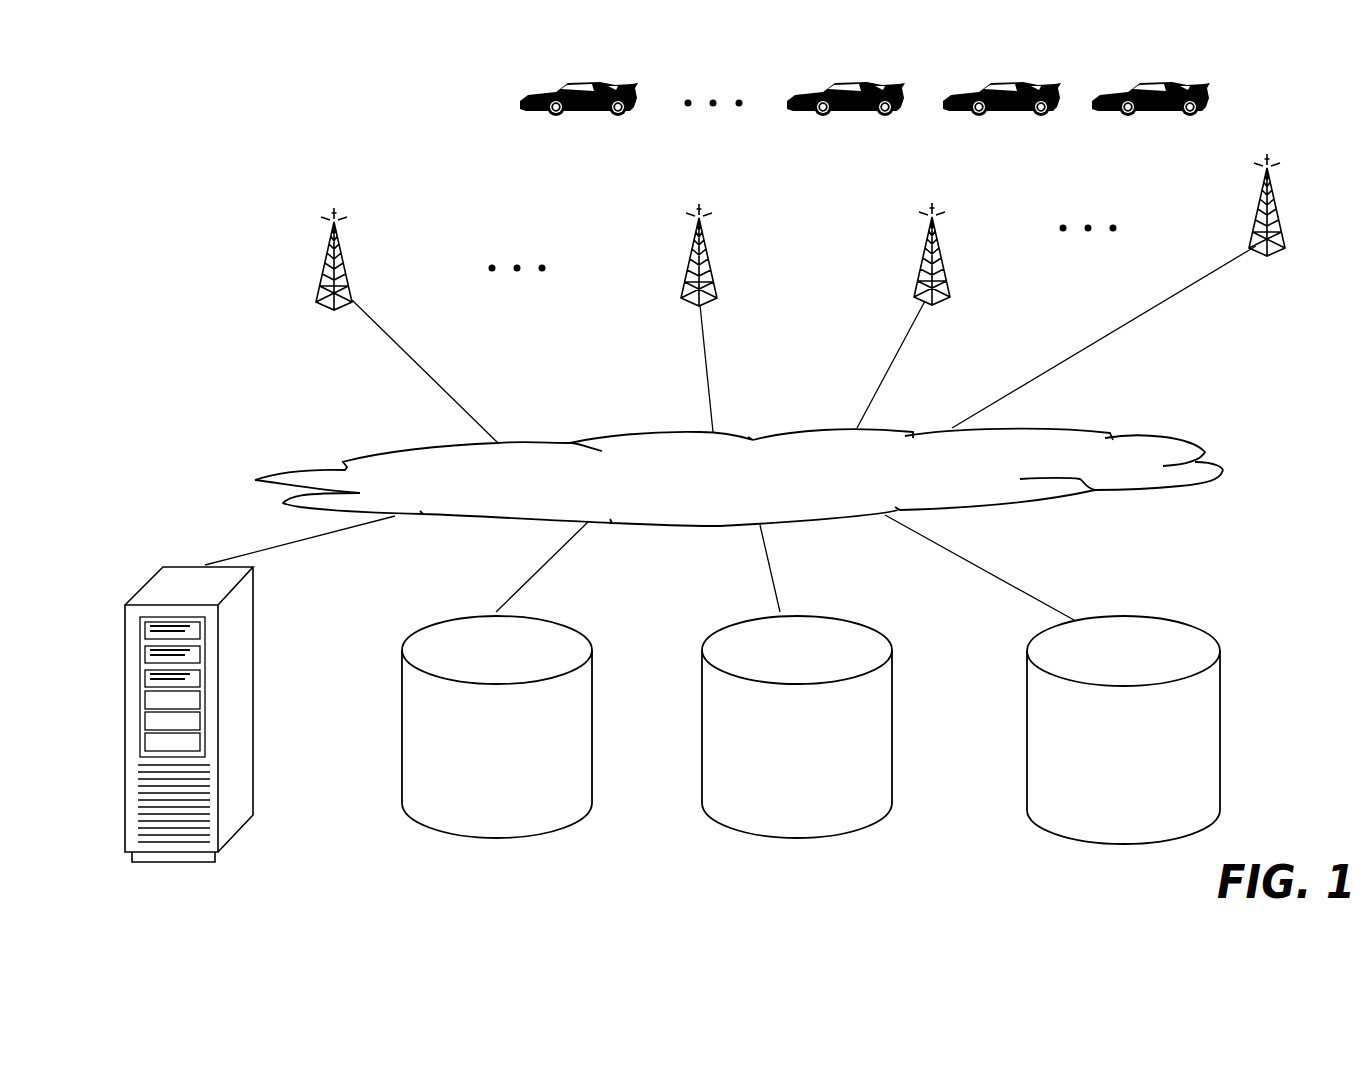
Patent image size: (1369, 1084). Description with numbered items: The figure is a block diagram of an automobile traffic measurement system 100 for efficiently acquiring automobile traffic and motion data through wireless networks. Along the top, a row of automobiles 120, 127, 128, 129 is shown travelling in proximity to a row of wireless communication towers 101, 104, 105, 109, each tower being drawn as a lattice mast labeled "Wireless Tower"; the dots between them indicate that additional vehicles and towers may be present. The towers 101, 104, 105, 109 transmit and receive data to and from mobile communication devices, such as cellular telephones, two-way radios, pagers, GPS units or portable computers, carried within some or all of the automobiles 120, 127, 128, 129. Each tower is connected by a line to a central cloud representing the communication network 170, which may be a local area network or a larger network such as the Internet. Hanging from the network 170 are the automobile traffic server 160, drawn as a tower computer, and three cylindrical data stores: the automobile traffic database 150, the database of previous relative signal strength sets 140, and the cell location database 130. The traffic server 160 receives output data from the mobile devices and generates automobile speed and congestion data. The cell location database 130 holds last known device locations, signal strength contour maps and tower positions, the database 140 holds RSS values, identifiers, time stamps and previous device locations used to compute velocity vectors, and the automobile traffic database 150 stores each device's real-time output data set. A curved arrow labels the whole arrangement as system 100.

The automobile traffic measurement system 100 is at (1252, 699).
The wireless communication tower 101 is at (322, 268).
The wireless communication tower 104 is at (688, 262).
The wireless communication tower 105 is at (921, 262).
The wireless communication tower 109 is at (1256, 216).
The automobile 120 is at (637, 154).
The automobile 127 is at (900, 151).
The automobile 128 is at (1057, 151).
The automobile 129 is at (1205, 151).
The cell location database 130 is at (1027, 726).
The database of previous relative signal strength (RSS) sets 140 is at (702, 738).
The automobile traffic database 150 is at (402, 740).
The automobile traffic server 160 is at (125, 745).
The communication network 170 is at (256, 480).